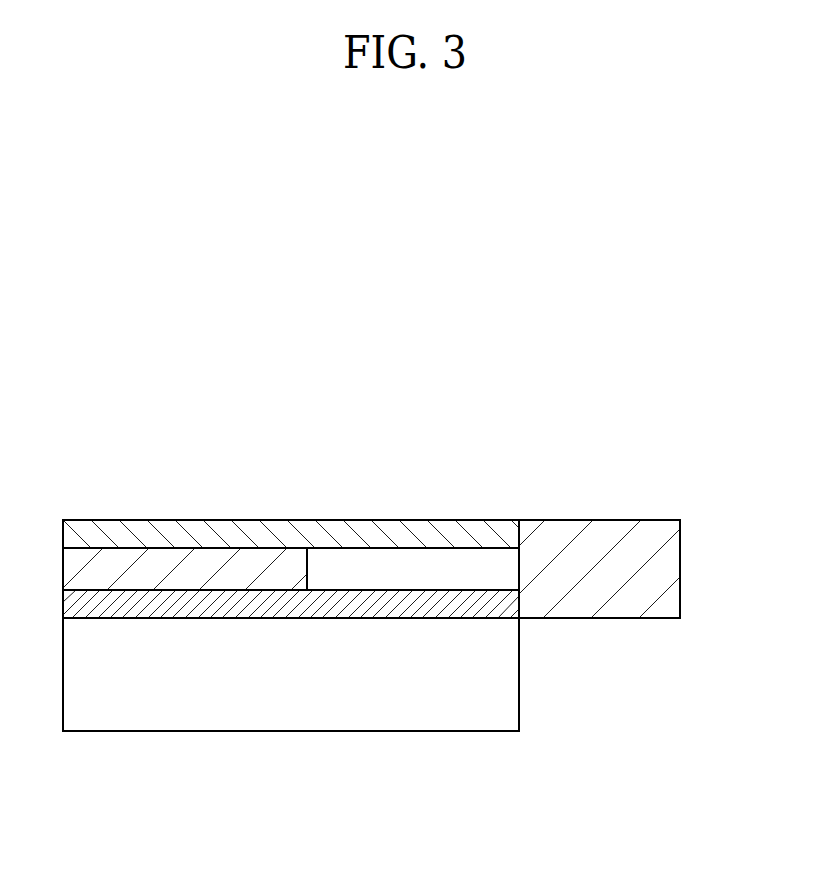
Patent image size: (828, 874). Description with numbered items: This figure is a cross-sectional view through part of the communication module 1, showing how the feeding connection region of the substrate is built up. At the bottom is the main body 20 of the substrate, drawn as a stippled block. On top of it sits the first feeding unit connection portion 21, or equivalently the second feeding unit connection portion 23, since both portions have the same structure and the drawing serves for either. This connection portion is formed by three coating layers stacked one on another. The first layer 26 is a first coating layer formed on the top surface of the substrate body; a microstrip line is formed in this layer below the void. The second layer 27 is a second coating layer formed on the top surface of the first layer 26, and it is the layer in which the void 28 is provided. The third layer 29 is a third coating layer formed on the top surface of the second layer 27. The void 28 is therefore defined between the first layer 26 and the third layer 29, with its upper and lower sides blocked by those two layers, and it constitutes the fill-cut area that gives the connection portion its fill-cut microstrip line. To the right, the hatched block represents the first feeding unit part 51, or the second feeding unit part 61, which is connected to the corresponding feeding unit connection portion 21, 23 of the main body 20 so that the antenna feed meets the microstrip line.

The communication module 1 is at (552, 370).
The main body 20 is at (290, 757).
The first feeding unit connection portion 21 is at (215, 478).
The second feeding unit connection portion 23 is at (215, 472).
The first layer 26 is at (113, 603).
The second layer 27 is at (172, 572).
The void 28 is at (400, 572).
The third layer 29 is at (264, 534).
The first feeding unit part 51 is at (592, 568).
The second feeding unit part 61 is at (592, 568).